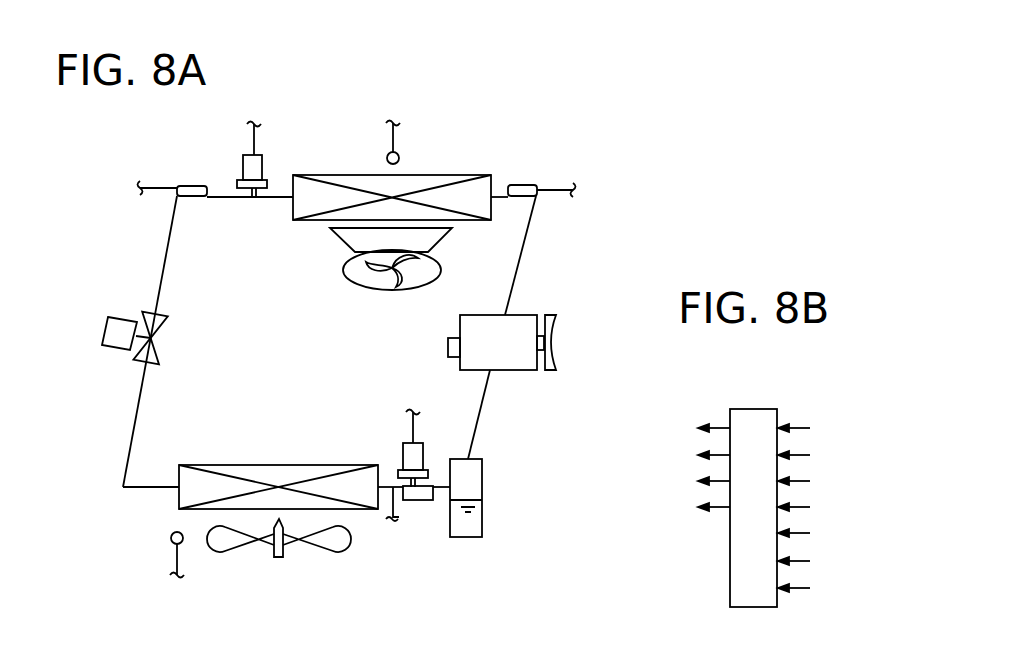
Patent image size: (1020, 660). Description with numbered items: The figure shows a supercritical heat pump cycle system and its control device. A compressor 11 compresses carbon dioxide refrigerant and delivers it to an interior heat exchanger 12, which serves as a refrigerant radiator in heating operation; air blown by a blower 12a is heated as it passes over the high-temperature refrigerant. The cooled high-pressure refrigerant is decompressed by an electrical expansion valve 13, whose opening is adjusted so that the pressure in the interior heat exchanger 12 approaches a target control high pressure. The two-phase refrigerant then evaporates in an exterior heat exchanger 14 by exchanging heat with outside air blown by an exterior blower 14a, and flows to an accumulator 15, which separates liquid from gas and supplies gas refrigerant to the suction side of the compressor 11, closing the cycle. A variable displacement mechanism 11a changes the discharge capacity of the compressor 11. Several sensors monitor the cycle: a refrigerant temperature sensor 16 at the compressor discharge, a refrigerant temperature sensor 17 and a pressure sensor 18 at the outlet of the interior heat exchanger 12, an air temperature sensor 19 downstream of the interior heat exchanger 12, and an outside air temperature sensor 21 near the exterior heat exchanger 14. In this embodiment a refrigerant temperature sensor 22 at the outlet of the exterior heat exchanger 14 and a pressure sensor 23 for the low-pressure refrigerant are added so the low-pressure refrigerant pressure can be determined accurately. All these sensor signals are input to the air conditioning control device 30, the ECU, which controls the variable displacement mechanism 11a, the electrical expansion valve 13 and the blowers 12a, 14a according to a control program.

In FIG. 8A, the compressor 11 is at (522, 320).
In FIG. 8A, the variable displacement mechanism 11a is at (448, 351).
In FIG. 8B, the variable displacement mechanism 11a is at (694, 428).
In FIG. 8A, the interior heat exchanger 12 is at (480, 188).
In FIG. 8A, the blower 12a is at (360, 283).
In FIG. 8B, the blower 12a is at (694, 455).
In FIG. 8A, the electrical expansion valve 13 is at (108, 333).
In FIG. 8B, the electrical expansion valve 13 is at (700, 481).
In FIG. 8A, the exterior heat exchanger 14 is at (276, 470).
In FIG. 8A, the exterior blower 14a is at (315, 545).
In FIG. 8B, the exterior blower 14a is at (694, 507).
In FIG. 8A, the accumulator 15 is at (466, 538).
In FIG. 8A, the refrigerant temperature sensor 16 is at (523, 186).
In FIG. 8B, the refrigerant temperature sensor 16 is at (809, 428).
In FIG. 8A, the refrigerant temperature sensor 17 is at (190, 186).
In FIG. 8B, the refrigerant temperature sensor 17 is at (809, 455).
In FIG. 8A, the pressure sensor 18 is at (258, 165).
In FIG. 8B, the pressure sensor 18 is at (809, 481).
In FIG. 8A, the air temperature sensor 19 is at (399, 157).
In FIG. 8B, the air temperature sensor 19 is at (809, 507).
In FIG. 8A, the outside air temperature sensor 21 is at (171, 538).
In FIG. 8B, the outside air temperature sensor 21 is at (809, 533).
In FIG. 8A, the refrigerant temperature sensor 22 is at (420, 500).
In FIG. 8B, the refrigerant temperature sensor 22 is at (809, 561).
In FIG. 8A, the pressure sensor 23 is at (405, 452).
In FIG. 8B, the pressure sensor 23 is at (809, 588).
In FIG. 8B, the air conditioning control device 30 is at (757, 418).